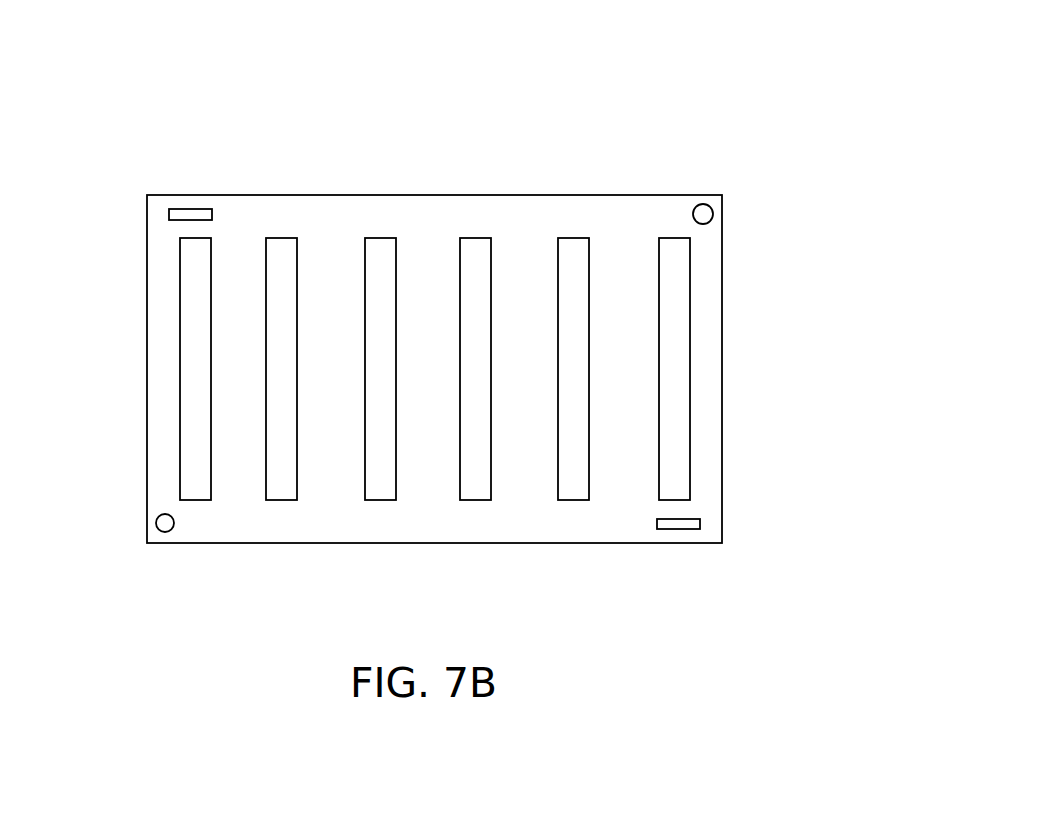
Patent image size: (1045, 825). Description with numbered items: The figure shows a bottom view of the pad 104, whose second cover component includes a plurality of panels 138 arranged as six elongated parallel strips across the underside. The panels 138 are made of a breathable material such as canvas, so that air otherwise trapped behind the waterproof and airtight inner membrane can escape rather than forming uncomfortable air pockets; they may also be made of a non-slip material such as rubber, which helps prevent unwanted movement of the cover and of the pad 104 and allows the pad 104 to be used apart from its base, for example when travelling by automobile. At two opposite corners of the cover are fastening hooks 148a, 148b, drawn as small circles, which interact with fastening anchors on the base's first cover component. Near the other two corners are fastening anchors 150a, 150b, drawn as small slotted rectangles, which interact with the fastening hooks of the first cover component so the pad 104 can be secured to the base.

The pad 104 is at (637, 114).
The panels 138 is at (480, 235).
The fastening hook 148a is at (713, 222).
The fastening hook 148b is at (157, 516).
The fastening anchor 150a is at (190, 207).
The fastening anchor 150b is at (676, 542).